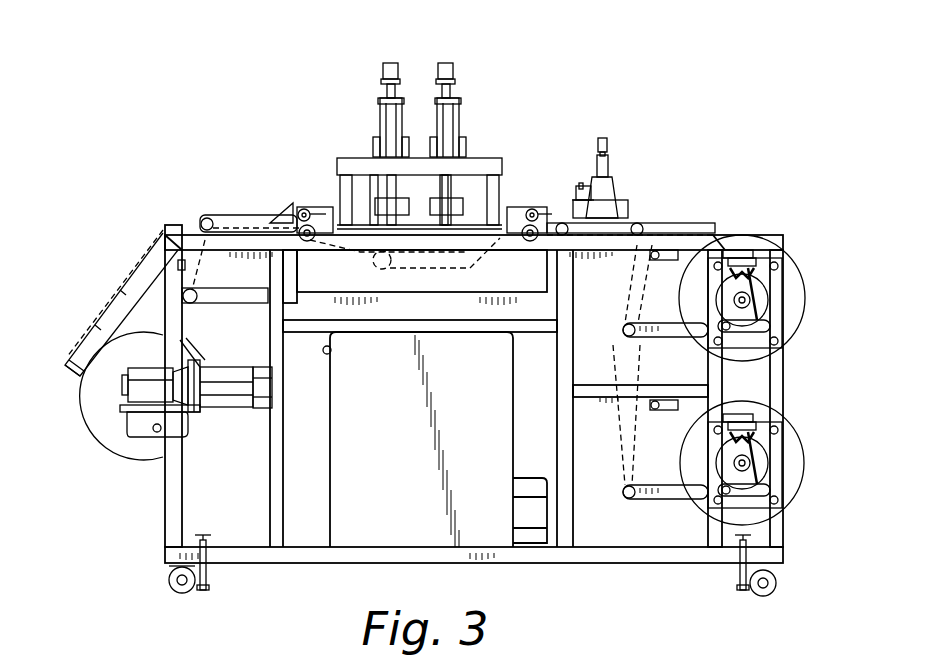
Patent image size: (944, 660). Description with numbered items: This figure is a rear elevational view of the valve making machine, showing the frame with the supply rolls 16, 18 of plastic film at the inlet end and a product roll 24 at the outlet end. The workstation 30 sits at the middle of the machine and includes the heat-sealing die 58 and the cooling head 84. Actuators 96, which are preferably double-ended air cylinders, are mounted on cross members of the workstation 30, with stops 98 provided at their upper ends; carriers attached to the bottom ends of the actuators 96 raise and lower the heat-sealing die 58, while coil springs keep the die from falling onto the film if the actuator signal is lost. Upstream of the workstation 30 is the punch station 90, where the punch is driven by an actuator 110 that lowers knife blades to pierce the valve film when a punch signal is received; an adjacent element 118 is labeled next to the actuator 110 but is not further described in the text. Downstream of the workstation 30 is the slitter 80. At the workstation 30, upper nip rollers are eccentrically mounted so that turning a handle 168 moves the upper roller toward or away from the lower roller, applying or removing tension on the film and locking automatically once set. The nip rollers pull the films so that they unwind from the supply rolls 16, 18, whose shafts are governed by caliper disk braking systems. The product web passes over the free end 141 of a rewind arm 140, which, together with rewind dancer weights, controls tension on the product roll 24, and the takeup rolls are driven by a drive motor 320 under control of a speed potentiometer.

The workstation 30 is at (420, 85).
The stops 98 is at (383, 72).
The actuators 96 is at (380, 122).
The handle 168 is at (298, 208).
The cooling head 84 is at (375, 204).
The heat-sealing die 58 is at (462, 204).
The slitter 80 is at (603, 133).
The punch station 90 is at (615, 178).
The bracket 118 is at (590, 186).
The actuator 110 is at (610, 165).
The supply roll 16 is at (788, 276).
The supply roll 18 is at (788, 432).
The rewind arm 140 is at (122, 300).
The free end 141 is at (72, 352).
The product roll 24 is at (102, 426).
The drive motor 320 is at (222, 373).